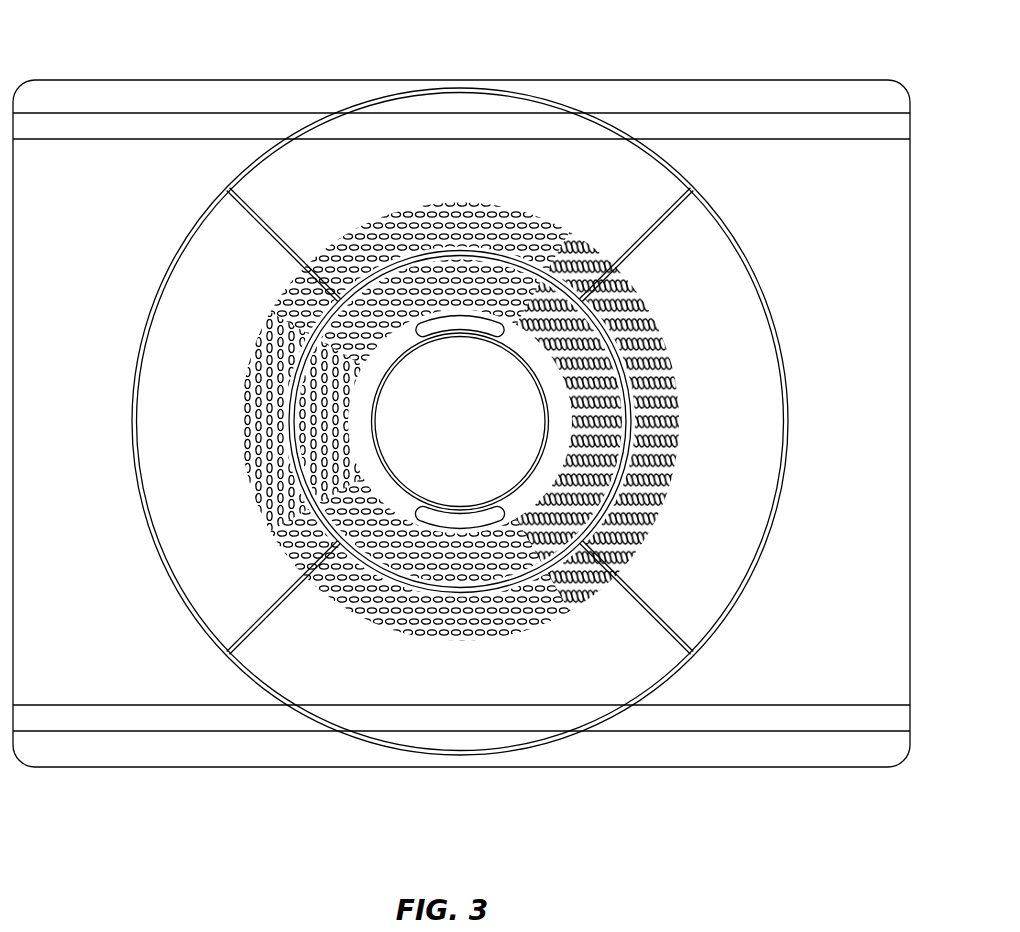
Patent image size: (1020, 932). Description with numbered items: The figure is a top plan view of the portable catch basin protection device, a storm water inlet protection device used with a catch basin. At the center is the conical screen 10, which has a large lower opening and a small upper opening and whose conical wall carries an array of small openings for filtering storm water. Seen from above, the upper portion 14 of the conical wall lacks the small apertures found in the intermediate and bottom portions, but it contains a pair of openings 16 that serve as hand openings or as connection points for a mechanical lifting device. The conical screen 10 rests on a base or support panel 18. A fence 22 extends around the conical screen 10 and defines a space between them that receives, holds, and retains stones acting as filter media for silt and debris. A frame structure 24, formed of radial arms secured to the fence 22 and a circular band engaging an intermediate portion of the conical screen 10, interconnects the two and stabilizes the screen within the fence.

The conical screen 10 is at (322, 637).
The upper portion of the conical wall 14 is at (558, 437).
The pair of openings 16 is at (477, 528).
The base or support panel 18 is at (745, 677).
The fence 22 is at (722, 198).
The frame structure 24 is at (273, 225).